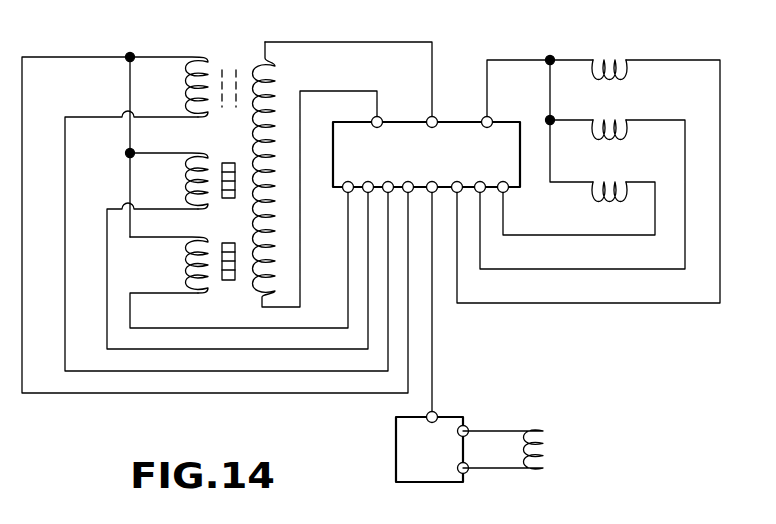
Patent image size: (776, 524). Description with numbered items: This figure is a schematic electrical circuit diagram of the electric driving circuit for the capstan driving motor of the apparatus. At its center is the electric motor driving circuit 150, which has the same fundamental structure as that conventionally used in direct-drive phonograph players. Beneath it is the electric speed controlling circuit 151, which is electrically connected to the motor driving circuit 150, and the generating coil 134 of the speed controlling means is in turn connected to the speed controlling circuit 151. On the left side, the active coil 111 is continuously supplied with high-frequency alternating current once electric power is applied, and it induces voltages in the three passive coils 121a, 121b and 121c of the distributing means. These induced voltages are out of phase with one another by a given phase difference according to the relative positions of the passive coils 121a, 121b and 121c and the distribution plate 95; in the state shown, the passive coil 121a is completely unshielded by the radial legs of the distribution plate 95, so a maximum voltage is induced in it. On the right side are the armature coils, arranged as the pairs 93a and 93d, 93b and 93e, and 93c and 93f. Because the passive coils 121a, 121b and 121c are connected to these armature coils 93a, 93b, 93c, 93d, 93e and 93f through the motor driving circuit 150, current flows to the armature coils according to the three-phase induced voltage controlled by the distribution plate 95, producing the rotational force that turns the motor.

The passive coil 121a is at (208, 114).
The passive coil 121b is at (208, 206).
The passive coil 121c is at (208, 290).
The distribution plate 95 is at (230, 280).
The active coil 111 is at (272, 97).
The electric motor driving circuit 150 is at (445, 166).
The electric speed controlling circuit 151 is at (442, 460).
The generating coil 134 is at (546, 433).
The armature coil 93a is at (665, 50).
The armature coil 93d is at (616, 57).
The armature coil 93b is at (654, 113).
The armature coil 93e is at (617, 92).
The armature coil 93c is at (625, 172).
The armature coil 93f is at (590, 179).